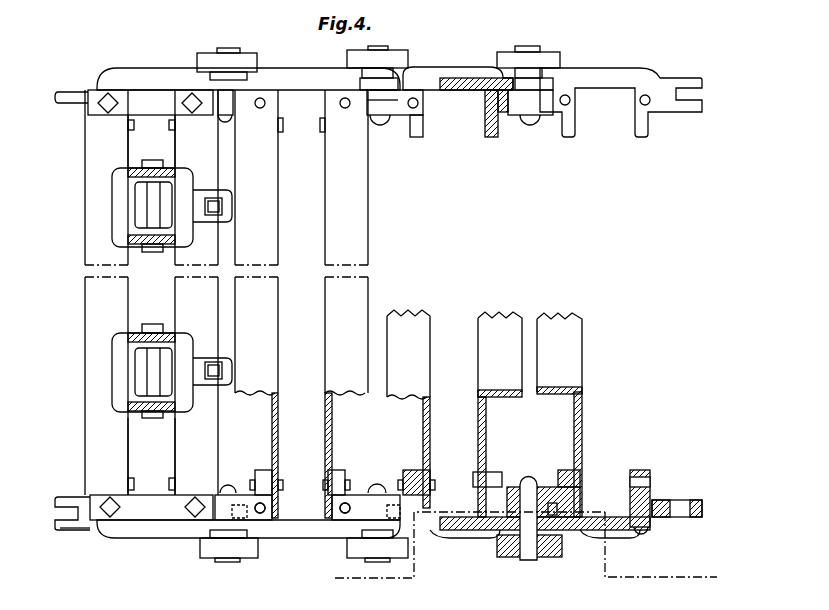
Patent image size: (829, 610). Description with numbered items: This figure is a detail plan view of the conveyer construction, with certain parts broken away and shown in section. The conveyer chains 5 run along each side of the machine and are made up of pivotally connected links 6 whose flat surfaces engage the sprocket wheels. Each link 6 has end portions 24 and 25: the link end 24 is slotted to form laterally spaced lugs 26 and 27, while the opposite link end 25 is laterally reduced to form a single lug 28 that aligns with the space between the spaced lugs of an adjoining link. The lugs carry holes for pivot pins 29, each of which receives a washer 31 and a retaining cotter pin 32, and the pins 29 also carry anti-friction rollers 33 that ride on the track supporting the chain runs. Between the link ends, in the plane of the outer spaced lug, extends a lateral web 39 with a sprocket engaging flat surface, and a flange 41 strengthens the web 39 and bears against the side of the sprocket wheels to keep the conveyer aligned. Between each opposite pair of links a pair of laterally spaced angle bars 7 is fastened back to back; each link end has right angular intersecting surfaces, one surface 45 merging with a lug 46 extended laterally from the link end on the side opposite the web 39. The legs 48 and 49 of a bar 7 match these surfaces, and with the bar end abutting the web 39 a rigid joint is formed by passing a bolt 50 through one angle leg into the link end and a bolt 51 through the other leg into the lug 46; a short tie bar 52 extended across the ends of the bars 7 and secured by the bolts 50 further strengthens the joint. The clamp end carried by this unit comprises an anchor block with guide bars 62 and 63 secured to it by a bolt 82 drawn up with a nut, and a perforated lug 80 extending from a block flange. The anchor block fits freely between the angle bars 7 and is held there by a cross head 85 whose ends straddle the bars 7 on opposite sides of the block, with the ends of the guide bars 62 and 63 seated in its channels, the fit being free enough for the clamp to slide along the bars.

The conveyer chains 5 is at (520, 552).
The links 6 is at (621, 260).
The angle bars 7 is at (333, 301).
The link end portion 24 is at (665, 108).
The link end portion 25 is at (558, 85).
The lug 26 is at (690, 80).
The lug 27 is at (702, 108).
The lug 28 is at (66, 100).
The pivot pins 29 is at (385, 50).
The washer 31 is at (390, 122).
The cotter pin 32 is at (378, 128).
The anti-friction rollers 33 is at (205, 62).
The lateral web 39 is at (455, 92).
The flange 41 is at (462, 70).
The surface 45 is at (597, 487).
The lug 46 is at (481, 435).
The leg 48 is at (563, 385).
The leg 49 is at (478, 462).
The bolt 50 is at (107, 97).
The bolt 51 is at (170, 127).
The tie bar 52 is at (107, 118).
The guide bar 62 is at (173, 182).
The guide bar 63 is at (175, 252).
The perforated lug 80 is at (233, 205).
The bolt 82 is at (150, 205).
The cross head 85 is at (118, 232).